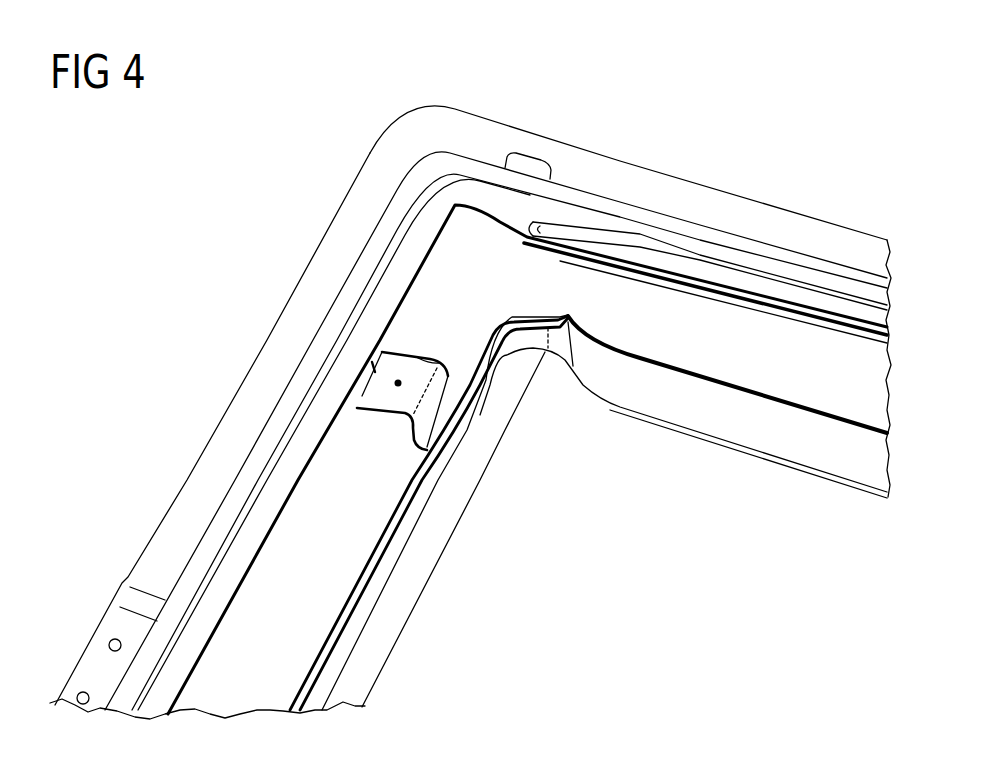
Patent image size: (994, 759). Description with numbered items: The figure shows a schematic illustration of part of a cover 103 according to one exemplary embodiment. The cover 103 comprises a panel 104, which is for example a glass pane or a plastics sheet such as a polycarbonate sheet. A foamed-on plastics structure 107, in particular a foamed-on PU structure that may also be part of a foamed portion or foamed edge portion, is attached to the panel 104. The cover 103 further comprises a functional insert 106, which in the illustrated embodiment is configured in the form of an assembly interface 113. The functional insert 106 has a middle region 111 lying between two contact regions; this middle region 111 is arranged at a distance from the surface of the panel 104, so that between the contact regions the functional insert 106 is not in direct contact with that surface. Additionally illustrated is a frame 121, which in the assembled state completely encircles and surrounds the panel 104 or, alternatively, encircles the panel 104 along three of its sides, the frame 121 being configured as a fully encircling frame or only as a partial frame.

The cover 103 is at (790, 150).
The panel 104 is at (293, 657).
The functional insert 106 is at (473, 397).
The foamed-on plastics structure 107 is at (337, 380).
The middle region 111 is at (392, 398).
The assembly interface 113 is at (398, 383).
The frame 121 is at (365, 182).